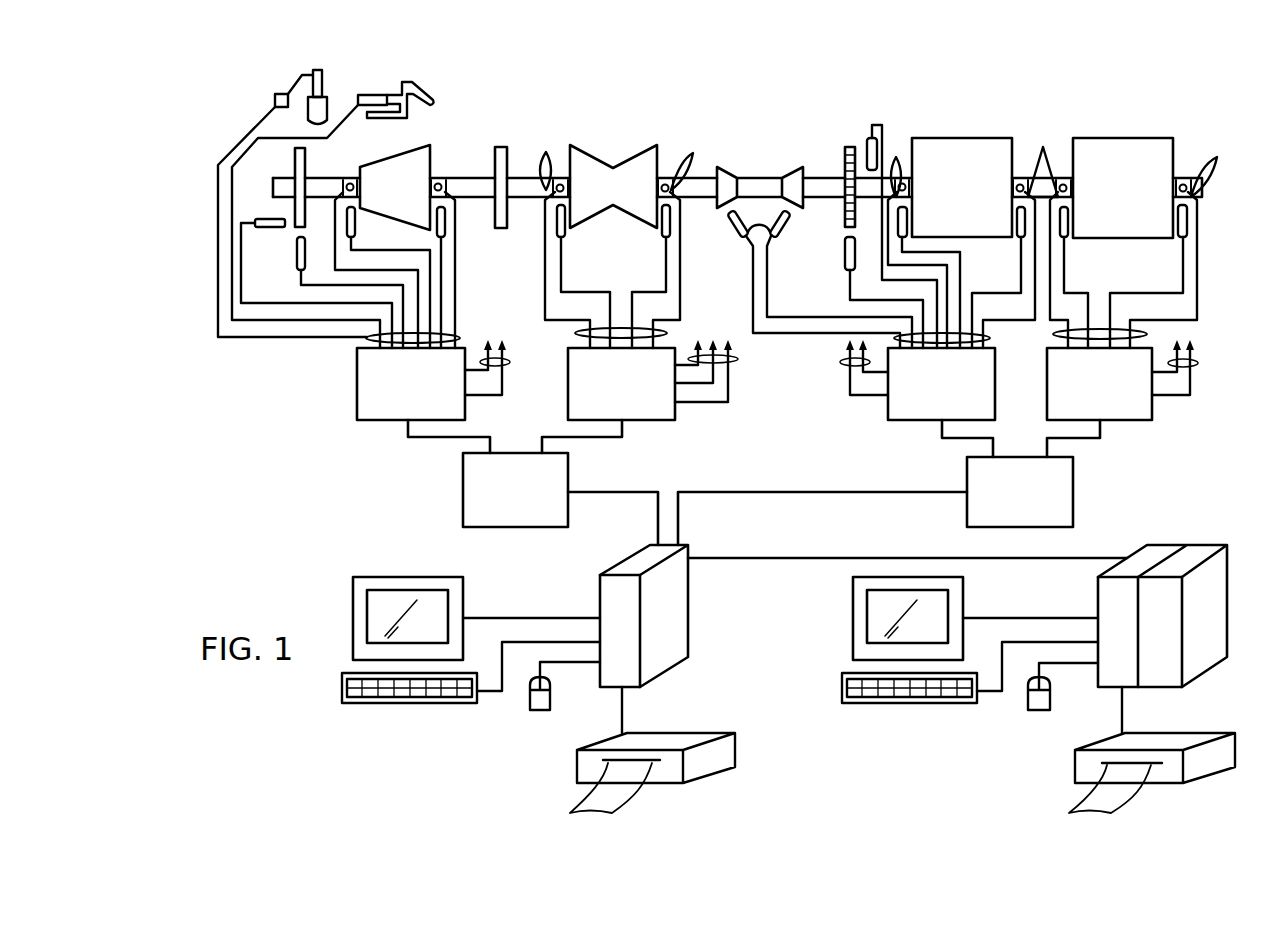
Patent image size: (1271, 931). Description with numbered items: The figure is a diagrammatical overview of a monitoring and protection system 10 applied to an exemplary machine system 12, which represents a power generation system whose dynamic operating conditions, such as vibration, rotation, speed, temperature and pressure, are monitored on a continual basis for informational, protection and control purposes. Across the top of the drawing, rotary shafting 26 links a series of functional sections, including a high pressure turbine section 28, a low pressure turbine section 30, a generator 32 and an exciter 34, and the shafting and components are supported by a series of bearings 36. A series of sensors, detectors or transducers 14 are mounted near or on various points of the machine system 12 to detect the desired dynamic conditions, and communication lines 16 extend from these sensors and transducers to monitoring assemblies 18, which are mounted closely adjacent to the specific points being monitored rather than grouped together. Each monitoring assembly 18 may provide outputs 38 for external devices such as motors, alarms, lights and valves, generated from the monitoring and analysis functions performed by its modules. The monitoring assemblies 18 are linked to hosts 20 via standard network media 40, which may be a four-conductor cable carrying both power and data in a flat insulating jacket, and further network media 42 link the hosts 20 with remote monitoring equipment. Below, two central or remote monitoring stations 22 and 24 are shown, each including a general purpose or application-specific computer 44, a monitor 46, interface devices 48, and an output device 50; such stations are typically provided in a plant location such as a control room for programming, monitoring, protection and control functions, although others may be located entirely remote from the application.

The monitoring and protection system 10 is at (298, 502).
The machine system 12 is at (1066, 112).
The sensors, detectors or transducers 14 is at (276, 99).
The communication lines 16 is at (460, 338).
The monitoring assemblies 18 is at (380, 421).
The hosts 20 is at (513, 528).
The central or remote monitoring station 22 is at (683, 683).
The central or remote monitoring station 24 is at (1205, 683).
The rotary shafting 26 is at (757, 176).
The high pressure turbine section 28 is at (416, 150).
The low pressure turbine section 30 is at (598, 153).
The generator 32 is at (962, 137).
The exciter 34 is at (1125, 137).
The bearings 36 is at (349, 182).
The outputs for external devices 38 is at (507, 362).
The network media 40 is at (450, 438).
The network media 42 is at (677, 520).
The computers 44 is at (690, 601).
The monitors 46 is at (352, 617).
The interface devices 48 is at (540, 712).
The output devices 50 is at (736, 750).